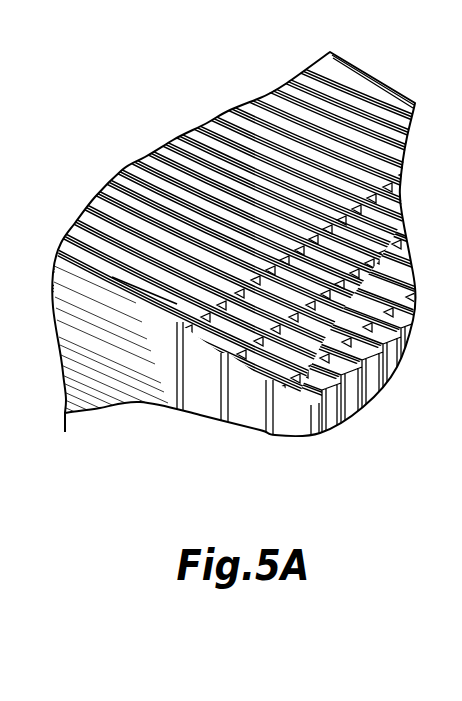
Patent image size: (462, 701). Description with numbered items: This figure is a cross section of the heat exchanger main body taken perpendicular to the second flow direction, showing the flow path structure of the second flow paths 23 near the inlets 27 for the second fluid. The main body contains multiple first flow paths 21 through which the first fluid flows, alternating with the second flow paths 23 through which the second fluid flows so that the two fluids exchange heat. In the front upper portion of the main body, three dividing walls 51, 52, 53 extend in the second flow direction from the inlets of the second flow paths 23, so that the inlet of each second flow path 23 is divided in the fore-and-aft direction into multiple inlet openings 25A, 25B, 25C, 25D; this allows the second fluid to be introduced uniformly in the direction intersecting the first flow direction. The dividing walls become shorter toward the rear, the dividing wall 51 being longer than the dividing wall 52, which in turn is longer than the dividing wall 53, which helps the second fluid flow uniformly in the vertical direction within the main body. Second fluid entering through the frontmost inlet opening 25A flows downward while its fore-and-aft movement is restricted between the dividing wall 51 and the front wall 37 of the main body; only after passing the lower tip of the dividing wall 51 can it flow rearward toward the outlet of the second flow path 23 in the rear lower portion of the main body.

The first flow path 21 is at (130, 200).
The second flow path 23 is at (188, 222).
The inlet 27 is at (322, 362).
The front wall 37 is at (353, 403).
The dividing wall 51 is at (347, 303).
The dividing wall 52 is at (267, 263).
The dividing wall 53 is at (213, 300).
The inlet opening 25A is at (347, 303).
The inlet opening 25B is at (267, 263).
The inlet opening 25C is at (213, 300).
The inlet opening 25D is at (178, 274).